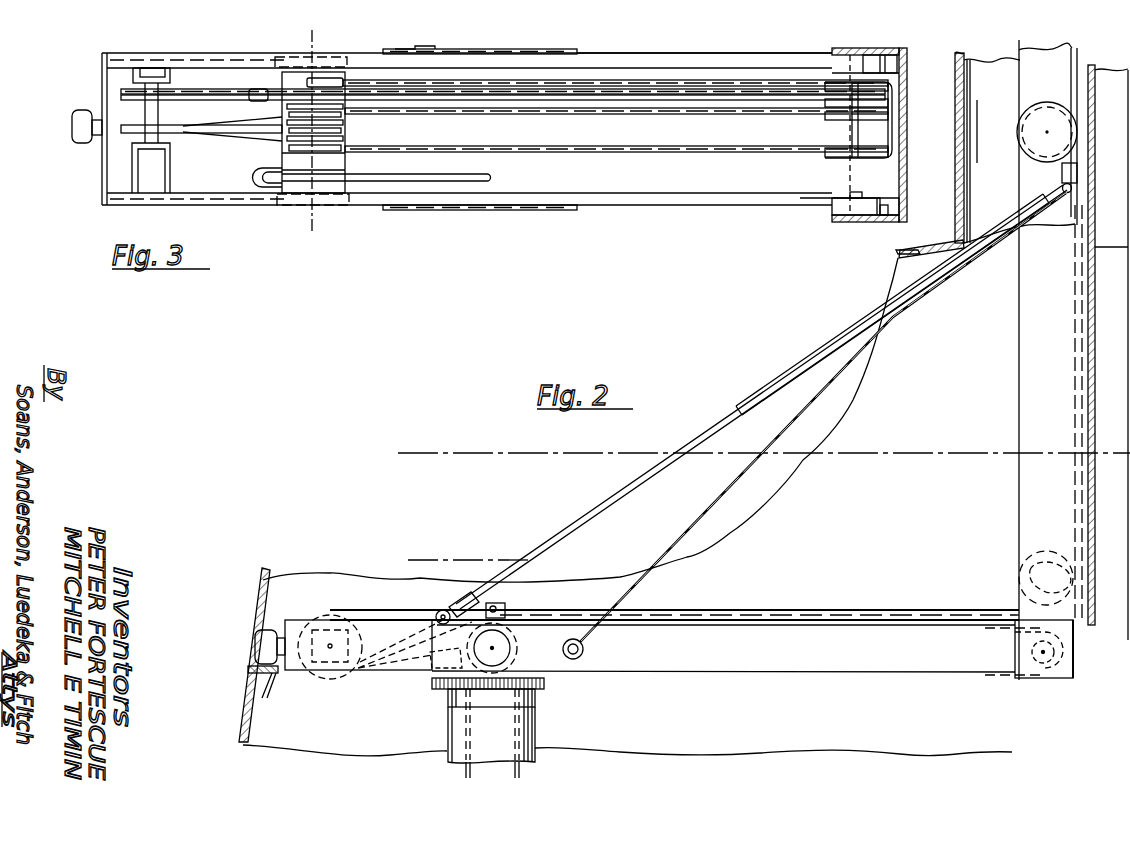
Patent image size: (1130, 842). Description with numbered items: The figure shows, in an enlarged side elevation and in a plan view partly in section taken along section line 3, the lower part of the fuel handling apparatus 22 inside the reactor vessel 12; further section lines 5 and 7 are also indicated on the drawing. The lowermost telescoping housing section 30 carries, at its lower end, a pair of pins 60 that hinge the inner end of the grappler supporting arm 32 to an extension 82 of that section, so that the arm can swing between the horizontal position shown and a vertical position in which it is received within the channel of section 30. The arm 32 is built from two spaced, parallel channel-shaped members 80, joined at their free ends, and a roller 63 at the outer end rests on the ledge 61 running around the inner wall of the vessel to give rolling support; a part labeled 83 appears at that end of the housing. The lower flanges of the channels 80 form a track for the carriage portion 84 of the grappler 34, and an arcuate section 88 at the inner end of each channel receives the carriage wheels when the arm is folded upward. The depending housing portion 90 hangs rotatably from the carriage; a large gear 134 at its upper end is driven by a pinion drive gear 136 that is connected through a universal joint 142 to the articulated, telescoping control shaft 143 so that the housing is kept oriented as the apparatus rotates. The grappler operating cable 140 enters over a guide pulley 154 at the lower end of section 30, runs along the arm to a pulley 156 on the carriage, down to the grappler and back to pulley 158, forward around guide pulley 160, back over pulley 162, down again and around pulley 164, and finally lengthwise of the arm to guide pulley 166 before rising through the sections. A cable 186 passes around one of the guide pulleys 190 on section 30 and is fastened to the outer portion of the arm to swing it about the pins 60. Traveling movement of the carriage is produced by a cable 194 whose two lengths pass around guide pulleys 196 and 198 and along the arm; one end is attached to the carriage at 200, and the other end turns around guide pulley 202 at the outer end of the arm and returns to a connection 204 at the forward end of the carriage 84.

In FIG. 2, the section line 3 is at (445, 462).
In FIG. 3, the section line 5- 5 is at (291, 41).
In FIG. 2, the section line 7- 7 is at (425, 578).
In FIG. 2, the reactor vessel 12 is at (935, 398).
In FIG. 2, the fuel handling apparatus 22 is at (1015, 348).
In FIG. 3, the lowermost telescoping housing section 30 is at (840, 222).
In FIG. 2, the lowermost telescoping housing section 30 is at (1098, 358).
In FIG. 3, the grappler supporting arm 32 is at (622, 213).
In FIG. 2, the grappler supporting arm 32 is at (833, 607).
In FIG. 2, the grappler 34 is at (505, 738).
In FIG. 3, the pins 60 is at (879, 50).
In FIG. 2, the pins 60 is at (1080, 652).
In FIG. 2, the ledge 61 is at (268, 684).
In FIG. 3, the roller 63 is at (86, 144).
In FIG. 2, the roller 63 is at (268, 630).
In FIG. 3, the channel-shaped members 80 is at (300, 53).
In FIG. 2, the channel-shaped members 80 is at (800, 676).
In FIG. 3, the extension 82 is at (877, 222).
In FIG. 2, the extension 82 is at (1078, 636).
In FIG. 3, the end wall 83 is at (103, 70).
In FIG. 3, the carriage portion 84 is at (348, 172).
In FIG. 2, the carriage portion 84 is at (517, 651).
In FIG. 2, the arcuate section 88 is at (1075, 675).
In FIG. 2, the depending housing portion 90 is at (540, 730).
In FIG. 2, the large gear 134 is at (546, 685).
In FIG. 2, the pinion drive gear 136 is at (436, 680).
In FIG. 3, the cable 140 is at (576, 114).
In FIG. 2, the universal joint 142 is at (438, 610).
In FIG. 3, the control shaft 143 is at (470, 177).
In FIG. 2, the control shaft 143 is at (586, 515).
In FIG. 3, the guide pulley 154 is at (890, 118).
In FIG. 3, the pulley 156 is at (345, 118).
In FIG. 3, the pulley 158 is at (270, 122).
In FIG. 3, the guide pulley 160 is at (172, 133).
In FIG. 3, the pulley 162 is at (345, 132).
In FIG. 3, the pulley 164 is at (280, 168).
In FIG. 3, the guide pulley 166 is at (830, 148).
In FIG. 3, the cable 186 is at (505, 53).
In FIG. 2, the cable 186 is at (722, 492).
In FIG. 2, the guide pulleys 190 is at (1030, 148).
In FIG. 3, the cable 194 is at (603, 102).
In FIG. 2, the cable 194 is at (750, 608).
In FIG. 3, the guide pulley 196 is at (830, 82).
In FIG. 3, the guide pulley 198 is at (889, 87).
In FIG. 3, the attachment point 200 is at (335, 78).
In FIG. 3, the guide pulley 202 is at (176, 93).
In FIG. 3, the connection 204 is at (260, 90).
In FIG. 2, the connection 204 is at (412, 675).